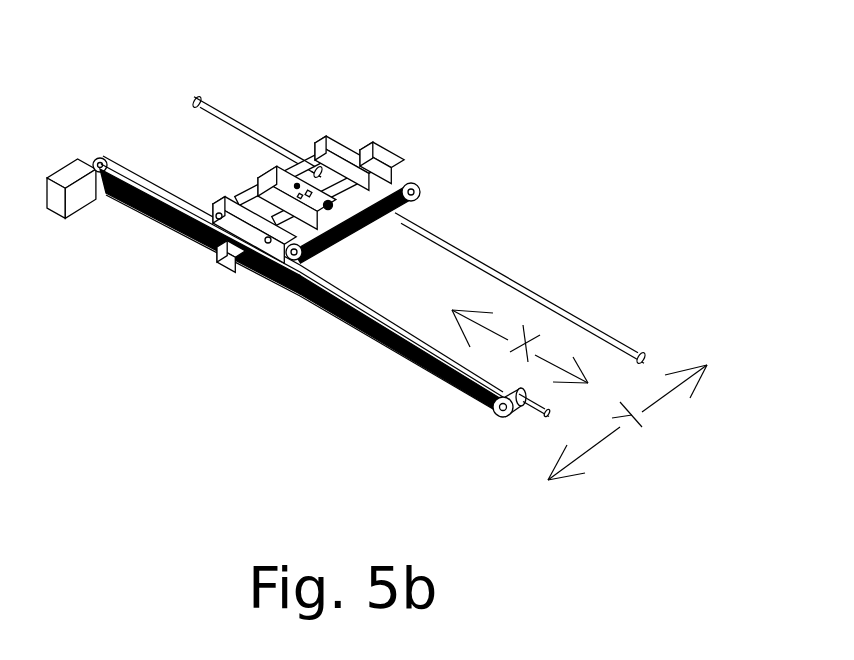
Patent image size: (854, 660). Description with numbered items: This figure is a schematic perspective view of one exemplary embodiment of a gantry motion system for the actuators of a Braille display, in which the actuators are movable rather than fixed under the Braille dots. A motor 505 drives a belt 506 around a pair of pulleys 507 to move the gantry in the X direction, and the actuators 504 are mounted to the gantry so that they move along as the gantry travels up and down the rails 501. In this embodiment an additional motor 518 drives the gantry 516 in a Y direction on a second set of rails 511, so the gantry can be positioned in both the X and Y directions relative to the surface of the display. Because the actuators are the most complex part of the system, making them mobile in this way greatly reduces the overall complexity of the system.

The rails 501 is at (596, 274).
The actuators 504 is at (310, 220).
The motor 505 is at (68, 258).
The belt 506 is at (370, 400).
The pulleys 507 is at (471, 462).
The second set of rails 511 is at (283, 106).
The gantry 516 is at (441, 128).
The additional motor 518 is at (385, 242).